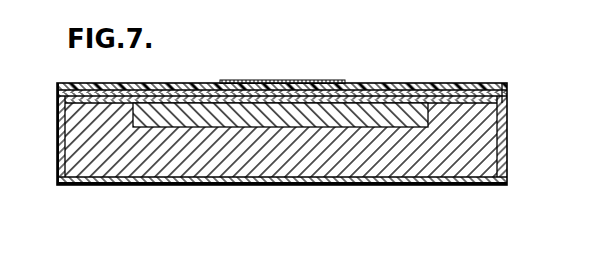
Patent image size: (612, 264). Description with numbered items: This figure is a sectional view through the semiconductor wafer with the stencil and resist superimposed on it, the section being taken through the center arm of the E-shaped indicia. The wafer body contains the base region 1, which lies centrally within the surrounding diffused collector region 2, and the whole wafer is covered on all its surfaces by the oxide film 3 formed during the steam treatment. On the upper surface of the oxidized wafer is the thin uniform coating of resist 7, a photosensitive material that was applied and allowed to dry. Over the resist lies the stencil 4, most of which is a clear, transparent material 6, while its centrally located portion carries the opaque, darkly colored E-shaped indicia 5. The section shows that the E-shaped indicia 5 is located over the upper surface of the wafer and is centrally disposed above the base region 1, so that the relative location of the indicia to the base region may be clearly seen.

The base region 1 is at (218, 122).
The diffused collector region 2 is at (262, 160).
The oxide film 3 is at (346, 178).
The stencil 4 is at (454, 78).
The E-shaped indicia 5 is at (258, 80).
The transparent material 6 is at (393, 84).
The coating of resist 7 is at (507, 92).